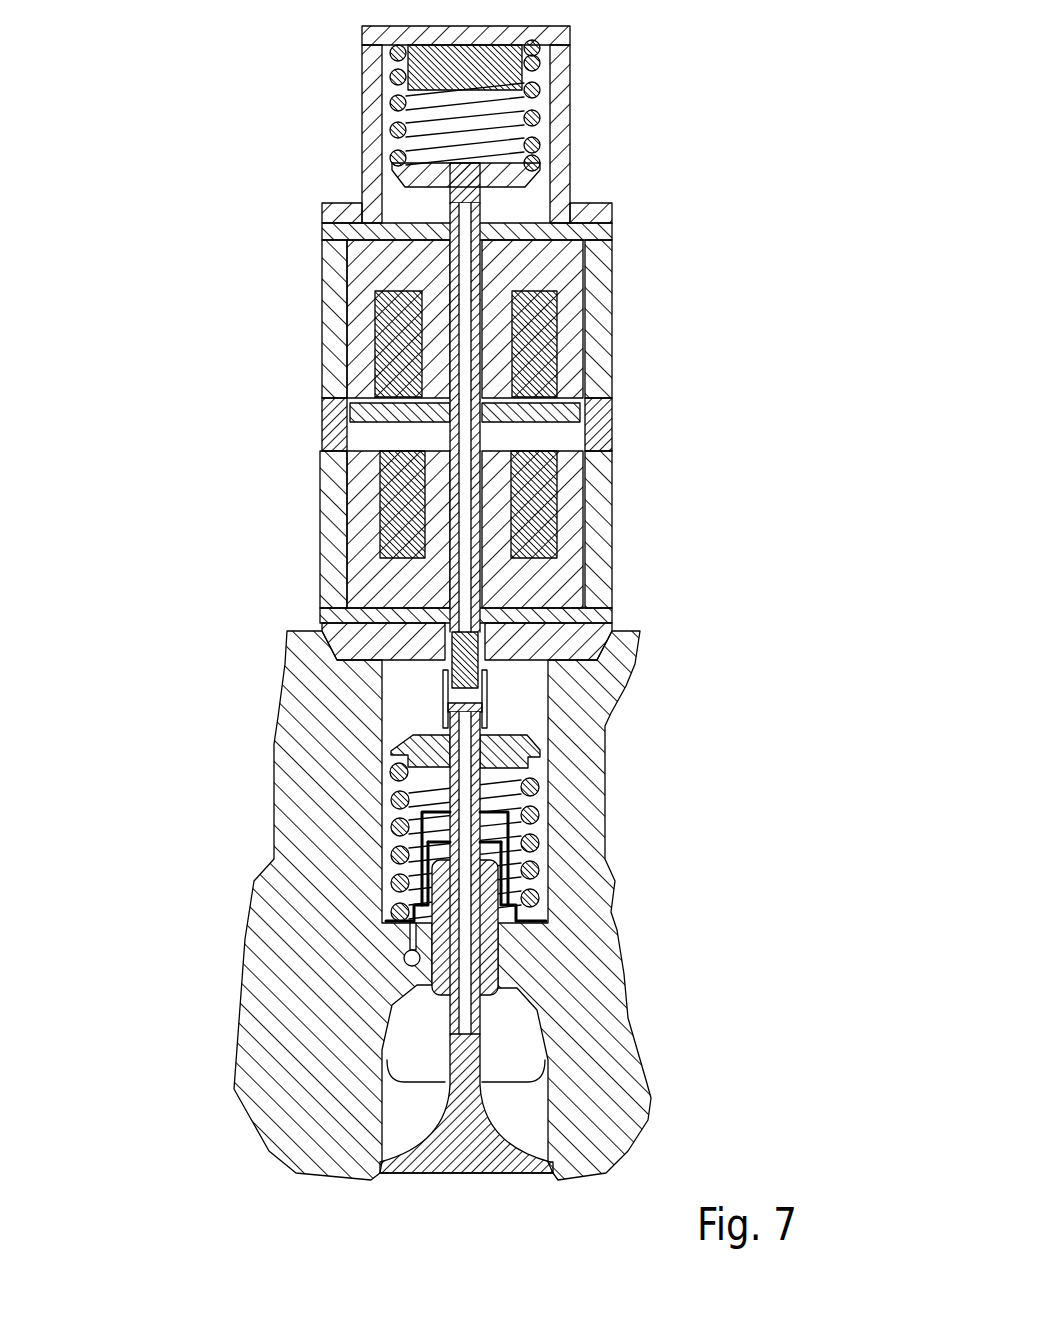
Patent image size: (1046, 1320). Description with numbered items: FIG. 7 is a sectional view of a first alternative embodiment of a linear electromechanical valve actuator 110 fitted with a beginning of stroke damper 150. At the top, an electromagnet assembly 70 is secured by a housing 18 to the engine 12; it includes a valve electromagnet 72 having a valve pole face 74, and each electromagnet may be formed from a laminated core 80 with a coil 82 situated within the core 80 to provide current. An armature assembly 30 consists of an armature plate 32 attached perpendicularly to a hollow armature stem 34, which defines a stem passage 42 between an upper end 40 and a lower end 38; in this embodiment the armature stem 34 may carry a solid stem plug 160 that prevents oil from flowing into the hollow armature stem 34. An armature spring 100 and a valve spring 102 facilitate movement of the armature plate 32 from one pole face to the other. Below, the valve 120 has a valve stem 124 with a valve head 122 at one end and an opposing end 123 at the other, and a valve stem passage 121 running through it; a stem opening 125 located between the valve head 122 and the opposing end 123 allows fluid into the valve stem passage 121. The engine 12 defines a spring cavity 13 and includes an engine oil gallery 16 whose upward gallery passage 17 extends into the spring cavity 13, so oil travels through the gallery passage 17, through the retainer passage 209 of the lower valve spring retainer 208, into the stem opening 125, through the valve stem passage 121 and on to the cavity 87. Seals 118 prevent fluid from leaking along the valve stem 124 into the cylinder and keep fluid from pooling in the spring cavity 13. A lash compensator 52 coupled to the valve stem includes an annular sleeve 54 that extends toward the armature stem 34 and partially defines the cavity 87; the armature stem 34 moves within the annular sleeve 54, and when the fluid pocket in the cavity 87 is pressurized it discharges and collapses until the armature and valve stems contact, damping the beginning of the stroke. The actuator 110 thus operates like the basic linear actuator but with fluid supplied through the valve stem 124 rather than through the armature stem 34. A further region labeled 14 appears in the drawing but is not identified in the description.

The linear electromechanical valve actuator 110 is at (690, 150).
The armature spring 100 is at (440, 90).
The stem passage 42 is at (452, 237).
The upper end 40 is at (490, 210).
The laminated core 80 is at (360, 263).
The electromagnet assembly 70 is at (557, 263).
The armature stem 34 is at (450, 312).
The coil 82 is at (547, 310).
The housing 18 is at (602, 330).
The valve pole face 74 is at (357, 393).
The armature plate 32 is at (582, 412).
The armature assembly 30 is at (487, 428).
The valve electromagnet 72 is at (590, 447).
The lower end 38 is at (446, 614).
The solid stem plug 160 is at (472, 650).
The annular sleeve 54 is at (448, 676).
The beginning of stroke damper 150 is at (435, 697).
The spring cavity 13 is at (497, 660).
The lash compensator 52 is at (487, 707).
The opposing end 123 is at (450, 722).
The cavity 87 is at (485, 710).
The engine 12 is at (306, 789).
The seals 118 is at (433, 812).
The stem opening 125 is at (440, 826).
The lower valve spring retainer 208 is at (440, 842).
The retainer passage 209 is at (425, 858).
The valve spring 102 is at (500, 872).
The gallery passage 17 is at (411, 942).
The engine oil gallery 16 is at (403, 962).
The valve stem 124 is at (482, 1013).
The valve stem passage 121 is at (465, 970).
The outlet cavity 14 is at (403, 1105).
The valve head 122 is at (453, 1174).
The valve 120 is at (500, 1180).